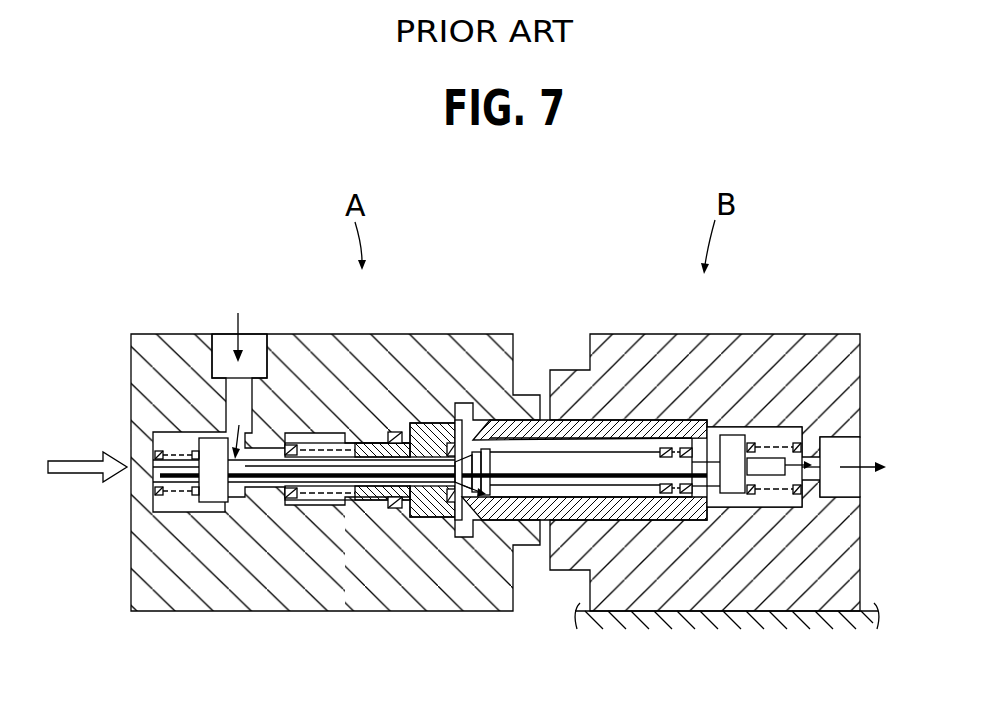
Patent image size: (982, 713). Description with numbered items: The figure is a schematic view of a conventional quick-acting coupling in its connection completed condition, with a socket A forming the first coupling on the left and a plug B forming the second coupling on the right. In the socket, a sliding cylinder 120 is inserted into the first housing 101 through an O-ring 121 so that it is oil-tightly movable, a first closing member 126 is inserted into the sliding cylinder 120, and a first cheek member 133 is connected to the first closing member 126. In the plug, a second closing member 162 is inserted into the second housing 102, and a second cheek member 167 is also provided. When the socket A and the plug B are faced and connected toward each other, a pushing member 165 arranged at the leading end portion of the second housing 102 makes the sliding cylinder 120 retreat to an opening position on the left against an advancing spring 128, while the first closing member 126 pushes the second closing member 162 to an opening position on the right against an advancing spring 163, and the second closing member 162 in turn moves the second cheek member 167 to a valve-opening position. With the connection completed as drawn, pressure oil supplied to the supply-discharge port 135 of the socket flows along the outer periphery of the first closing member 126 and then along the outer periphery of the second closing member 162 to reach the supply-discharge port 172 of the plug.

The first housing 101 is at (316, 326).
The second housing 102 is at (725, 326).
The supply-discharge port 135 is at (258, 333).
The first cheek member 133 is at (212, 502).
The advancing spring 128 is at (293, 500).
The O-ring 121 is at (393, 508).
The sliding cylinder 120 is at (430, 513).
The pushing member 165 is at (478, 520).
The first closing member 126 is at (466, 450).
The second closing member 162 is at (540, 457).
The advancing spring 163 is at (663, 494).
The second cheek member 167 is at (731, 490).
The supply-discharge port 172 is at (843, 437).